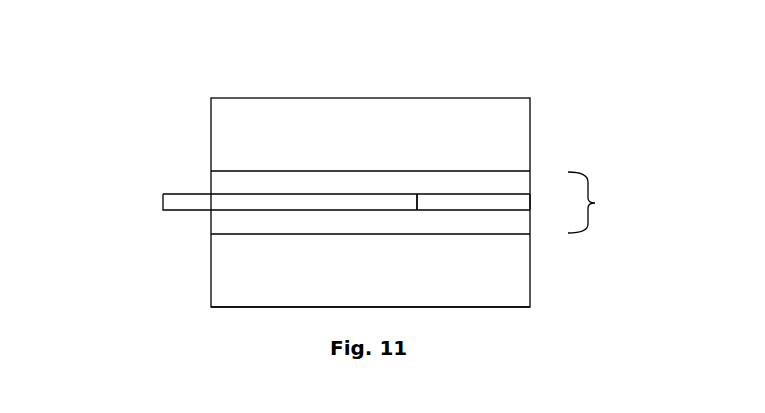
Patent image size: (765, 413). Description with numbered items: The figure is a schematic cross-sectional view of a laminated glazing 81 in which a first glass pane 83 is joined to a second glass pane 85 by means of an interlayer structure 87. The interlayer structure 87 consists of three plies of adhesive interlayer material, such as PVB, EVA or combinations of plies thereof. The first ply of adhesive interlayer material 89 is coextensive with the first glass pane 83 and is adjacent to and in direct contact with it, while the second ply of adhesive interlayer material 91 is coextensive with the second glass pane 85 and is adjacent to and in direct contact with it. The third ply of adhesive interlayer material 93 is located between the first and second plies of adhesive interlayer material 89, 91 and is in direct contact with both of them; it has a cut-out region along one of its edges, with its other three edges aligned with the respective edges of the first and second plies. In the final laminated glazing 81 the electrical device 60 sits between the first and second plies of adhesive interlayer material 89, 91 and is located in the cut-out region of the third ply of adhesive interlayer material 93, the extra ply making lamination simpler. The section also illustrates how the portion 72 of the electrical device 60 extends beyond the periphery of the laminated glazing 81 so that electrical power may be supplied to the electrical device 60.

The laminated glazing 81 is at (543, 72).
The first glass pane 83 is at (241, 118).
The first ply of adhesive interlayer material 89 is at (210, 182).
The portion 72 is at (183, 183).
The electrical device 60 is at (175, 203).
The second ply of adhesive interlayer material 91 is at (222, 220).
The second glass pane 85 is at (245, 292).
The third ply of adhesive interlayer material 93 is at (517, 201).
The interlayer structure 87 is at (595, 203).